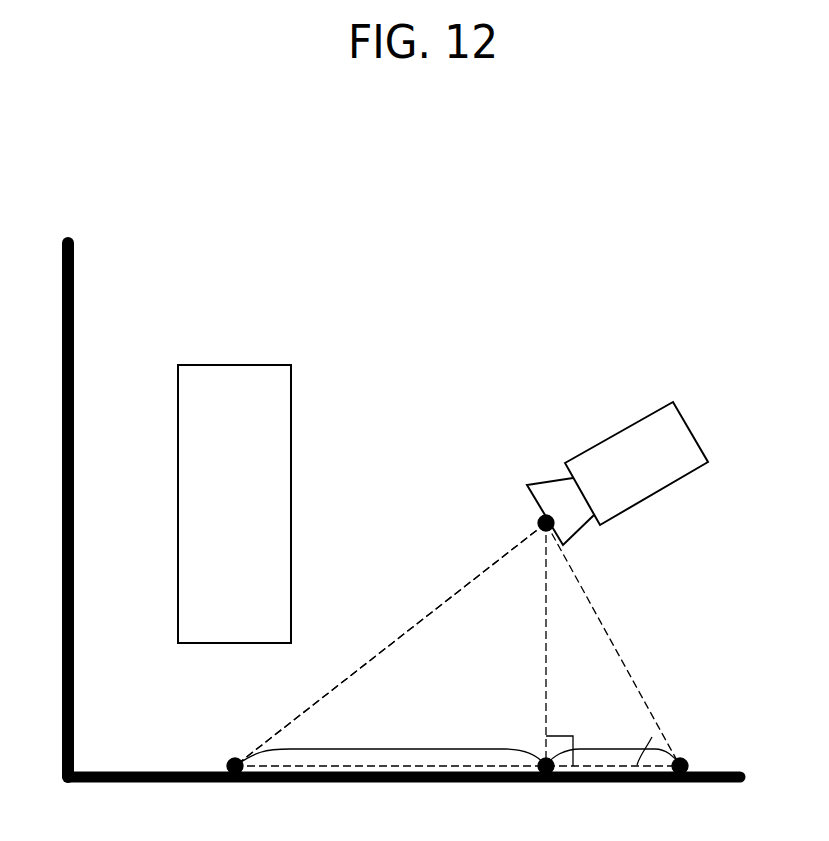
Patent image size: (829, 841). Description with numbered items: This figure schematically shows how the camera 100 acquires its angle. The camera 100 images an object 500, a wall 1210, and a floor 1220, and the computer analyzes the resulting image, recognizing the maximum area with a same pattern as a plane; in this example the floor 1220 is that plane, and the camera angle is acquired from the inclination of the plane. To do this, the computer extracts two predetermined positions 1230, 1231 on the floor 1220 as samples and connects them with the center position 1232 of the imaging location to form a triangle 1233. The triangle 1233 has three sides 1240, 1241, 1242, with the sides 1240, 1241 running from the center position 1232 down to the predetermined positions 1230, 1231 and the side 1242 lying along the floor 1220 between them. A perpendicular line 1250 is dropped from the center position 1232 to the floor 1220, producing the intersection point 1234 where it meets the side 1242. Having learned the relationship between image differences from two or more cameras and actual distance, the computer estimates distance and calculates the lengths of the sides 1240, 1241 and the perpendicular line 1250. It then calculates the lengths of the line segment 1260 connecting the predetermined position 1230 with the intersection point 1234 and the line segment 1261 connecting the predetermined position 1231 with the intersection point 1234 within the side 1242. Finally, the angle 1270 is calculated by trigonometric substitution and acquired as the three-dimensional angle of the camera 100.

The camera 100 is at (656, 421).
The object 500 is at (246, 365).
The wall 1210 is at (68, 243).
The floor 1220 is at (707, 771).
The predetermined position 1230 is at (230, 759).
The predetermined position 1231 is at (686, 758).
The center position of the imaging location 1232 is at (547, 514).
The triangle 1233 is at (407, 637).
The intersection point 1234 is at (541, 759).
The side 1240 is at (497, 558).
The side 1241 is at (594, 598).
The side 1242 is at (438, 765).
The perpendicular line 1250 is at (548, 686).
The line segment 1260 is at (390, 749).
The line segment 1261 is at (612, 749).
The angle 1270 is at (652, 737).